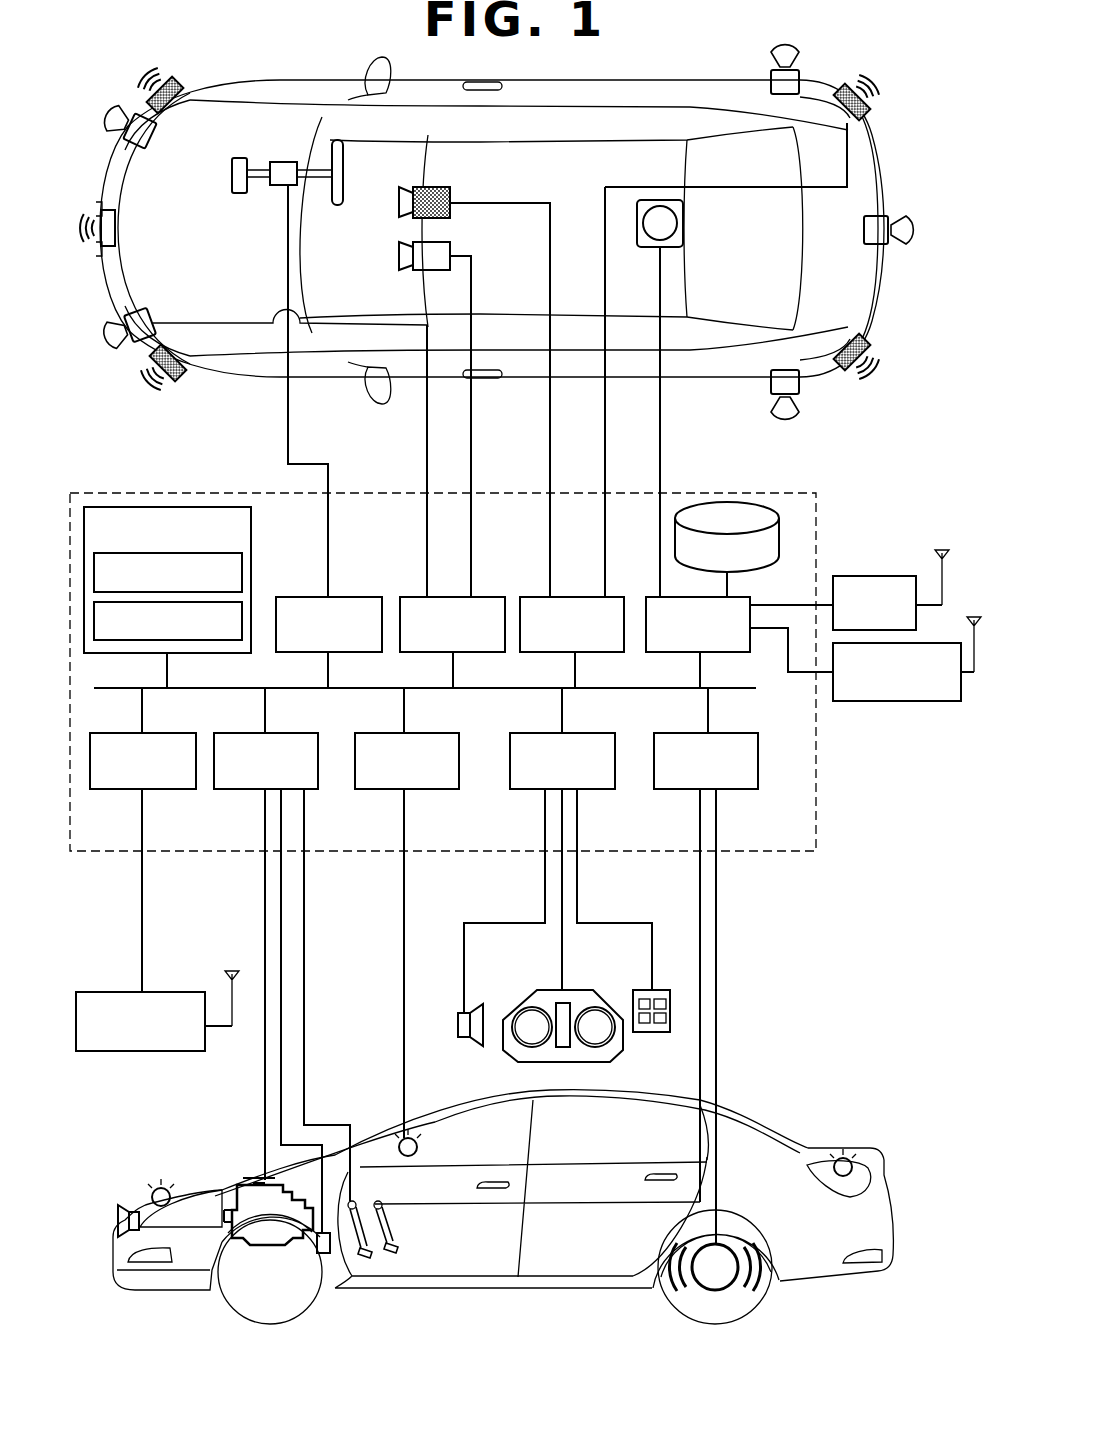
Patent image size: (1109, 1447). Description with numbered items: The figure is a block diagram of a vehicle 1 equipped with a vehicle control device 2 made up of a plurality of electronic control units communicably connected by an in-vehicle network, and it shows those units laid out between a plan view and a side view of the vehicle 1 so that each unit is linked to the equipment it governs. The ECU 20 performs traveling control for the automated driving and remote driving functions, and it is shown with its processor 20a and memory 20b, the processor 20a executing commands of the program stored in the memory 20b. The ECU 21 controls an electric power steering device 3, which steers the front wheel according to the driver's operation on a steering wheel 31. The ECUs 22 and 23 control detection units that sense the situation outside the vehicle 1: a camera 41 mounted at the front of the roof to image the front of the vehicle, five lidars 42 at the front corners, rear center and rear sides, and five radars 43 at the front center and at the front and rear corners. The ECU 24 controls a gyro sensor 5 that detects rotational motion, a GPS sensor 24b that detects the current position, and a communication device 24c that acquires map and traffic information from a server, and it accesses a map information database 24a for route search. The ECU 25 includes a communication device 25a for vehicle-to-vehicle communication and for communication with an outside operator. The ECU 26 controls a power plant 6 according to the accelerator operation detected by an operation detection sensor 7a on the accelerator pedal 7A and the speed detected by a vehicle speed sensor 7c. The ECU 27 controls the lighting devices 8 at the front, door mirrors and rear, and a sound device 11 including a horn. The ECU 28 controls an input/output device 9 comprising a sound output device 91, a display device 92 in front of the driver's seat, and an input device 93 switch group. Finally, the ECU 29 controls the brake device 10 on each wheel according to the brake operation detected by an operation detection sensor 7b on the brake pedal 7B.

The vehicle 1 is at (896, 148).
The vehicle control device 2 is at (804, 853).
The electric power steering device 3 is at (240, 196).
The gyro sensor 5 is at (685, 222).
The power plant 6 is at (238, 1180).
The accelerator pedal 7A is at (382, 1254).
The brake pedal 7B is at (408, 1238).
The operation detection sensor 7a is at (352, 1200).
The operation detection sensor 7b is at (383, 1202).
The vehicle speed sensor 7c is at (322, 1254).
The lighting devices 8 is at (150, 1196).
The input/output device 9 is at (554, 1037).
The brake device 10 is at (715, 1290).
The sound device 11 is at (116, 1214).
The ECU 20 is at (200, 569).
The processor 20a is at (242, 572).
The memory 20b is at (242, 620).
The ECU 21 is at (360, 596).
The ECU 22 is at (452, 596).
The ECU 23 is at (576, 596).
The ECU 24 is at (643, 596).
The map information database 24a is at (726, 502).
The GPS sensor 24b is at (890, 575).
The communication device 24c is at (878, 702).
The ECU 25 is at (172, 790).
The communication device 25a is at (143, 1053).
The ECU 26 is at (240, 790).
The ECU 27 is at (430, 790).
The ECU 28 is at (598, 790).
The ECU 29 is at (738, 790).
The steering wheel 31 is at (337, 206).
The camera 41 is at (452, 210).
The lidar 42 is at (152, 148).
The millimeter-wave radar 43 is at (172, 107).
The sound output device 91 is at (456, 1022).
The display device 92 is at (524, 1008).
The input device 93 is at (652, 1033).